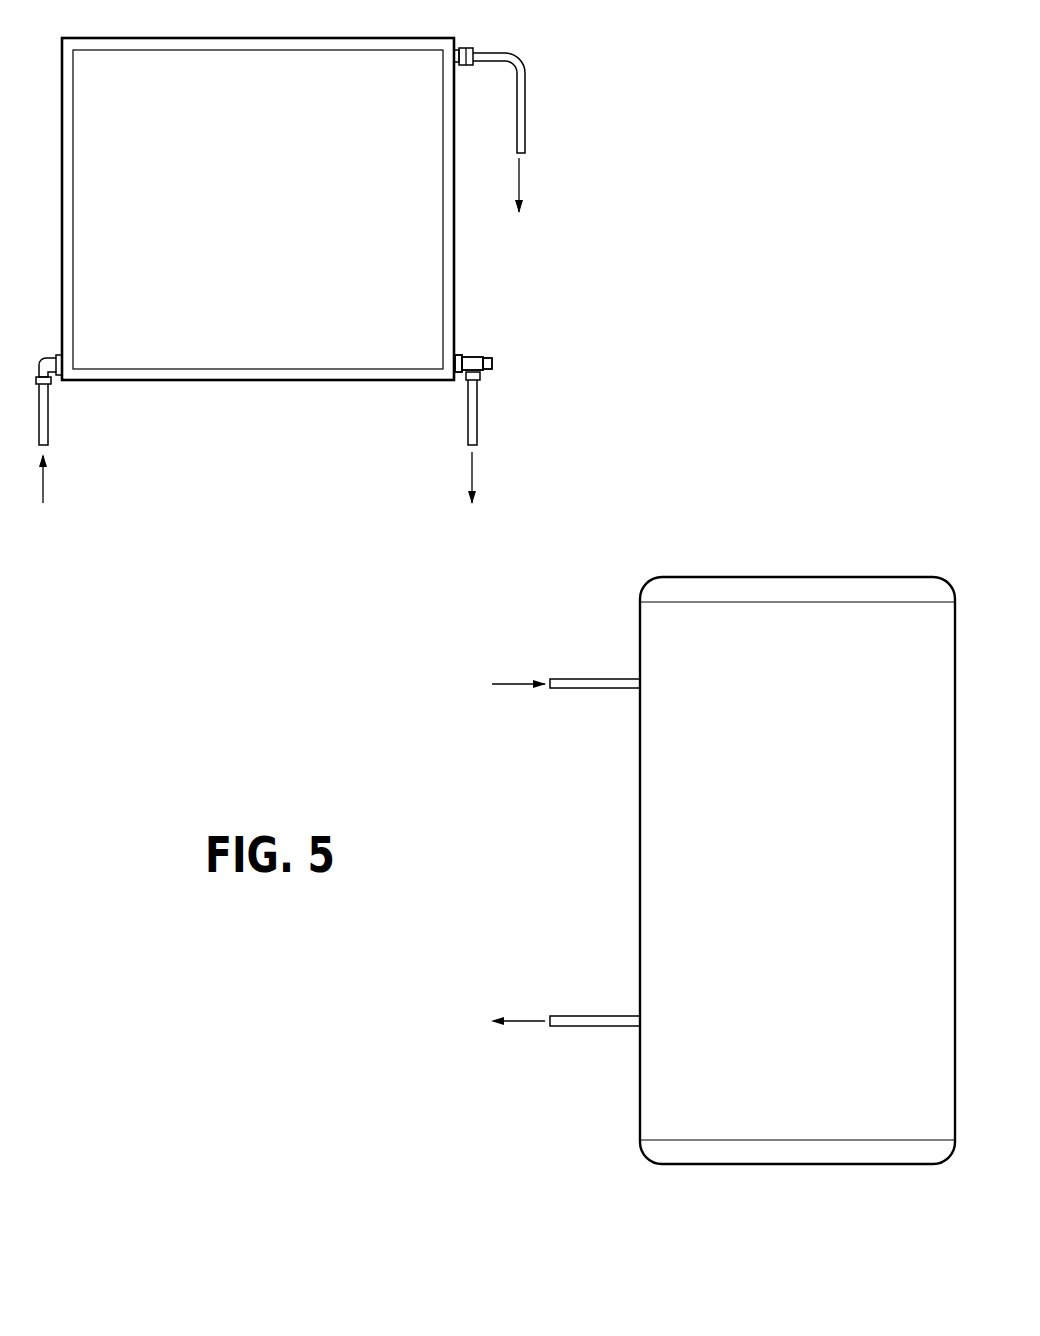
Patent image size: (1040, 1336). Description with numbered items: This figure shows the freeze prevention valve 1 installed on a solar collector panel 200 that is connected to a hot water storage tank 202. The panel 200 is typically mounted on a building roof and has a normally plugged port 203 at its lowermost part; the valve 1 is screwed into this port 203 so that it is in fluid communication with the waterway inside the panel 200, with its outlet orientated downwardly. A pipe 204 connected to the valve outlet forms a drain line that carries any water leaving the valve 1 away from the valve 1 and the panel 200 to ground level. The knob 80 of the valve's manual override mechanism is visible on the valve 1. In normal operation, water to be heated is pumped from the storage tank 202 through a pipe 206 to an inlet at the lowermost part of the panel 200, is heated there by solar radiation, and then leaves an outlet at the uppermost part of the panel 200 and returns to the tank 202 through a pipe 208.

The valve 1 is at (481, 343).
The knob 80 is at (492, 362).
The solar collector panel 200 is at (277, 213).
The hot water storage tank 202 is at (817, 877).
The port 203 is at (455, 362).
The pipe 204 is at (478, 414).
The pipe 206 is at (50, 416).
The pipe 208 is at (525, 76).